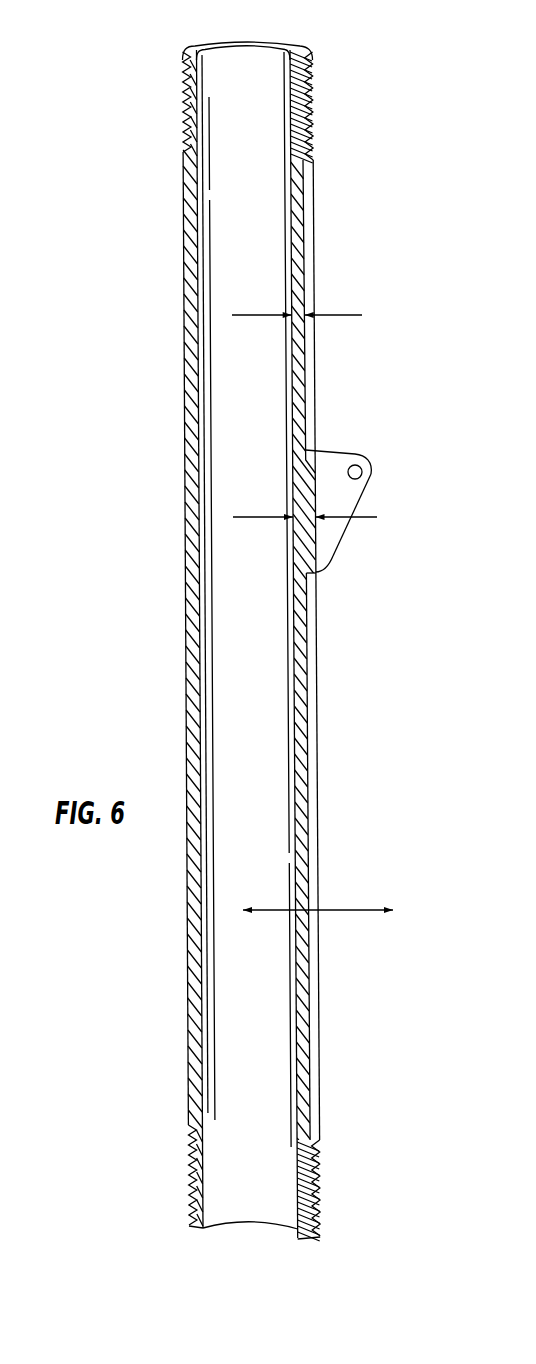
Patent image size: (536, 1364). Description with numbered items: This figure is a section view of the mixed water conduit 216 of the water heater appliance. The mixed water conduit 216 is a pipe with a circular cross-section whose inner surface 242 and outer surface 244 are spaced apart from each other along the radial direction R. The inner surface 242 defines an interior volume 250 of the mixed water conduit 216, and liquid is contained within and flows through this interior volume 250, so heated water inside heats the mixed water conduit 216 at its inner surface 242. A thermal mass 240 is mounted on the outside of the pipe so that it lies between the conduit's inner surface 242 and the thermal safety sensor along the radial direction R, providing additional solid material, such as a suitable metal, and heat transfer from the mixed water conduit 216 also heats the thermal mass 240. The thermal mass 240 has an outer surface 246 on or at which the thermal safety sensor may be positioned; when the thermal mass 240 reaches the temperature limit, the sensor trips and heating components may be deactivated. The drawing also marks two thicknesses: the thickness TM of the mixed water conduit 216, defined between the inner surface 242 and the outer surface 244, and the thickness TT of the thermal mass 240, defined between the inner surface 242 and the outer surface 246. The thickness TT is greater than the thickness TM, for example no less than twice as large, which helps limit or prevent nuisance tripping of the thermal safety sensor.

The mixed water conduit 216 is at (312, 738).
The thermal mass 240 is at (330, 453).
The inner surface 242 is at (207, 360).
The outer surface 244 is at (310, 225).
The outer surface of thermal mass 246 is at (350, 498).
The interior volume 250 is at (246, 112).
The thickness of mixed water conduit TM is at (352, 315).
The thickness of thermal mass TT is at (362, 517).
The radial direction R is at (345, 910).